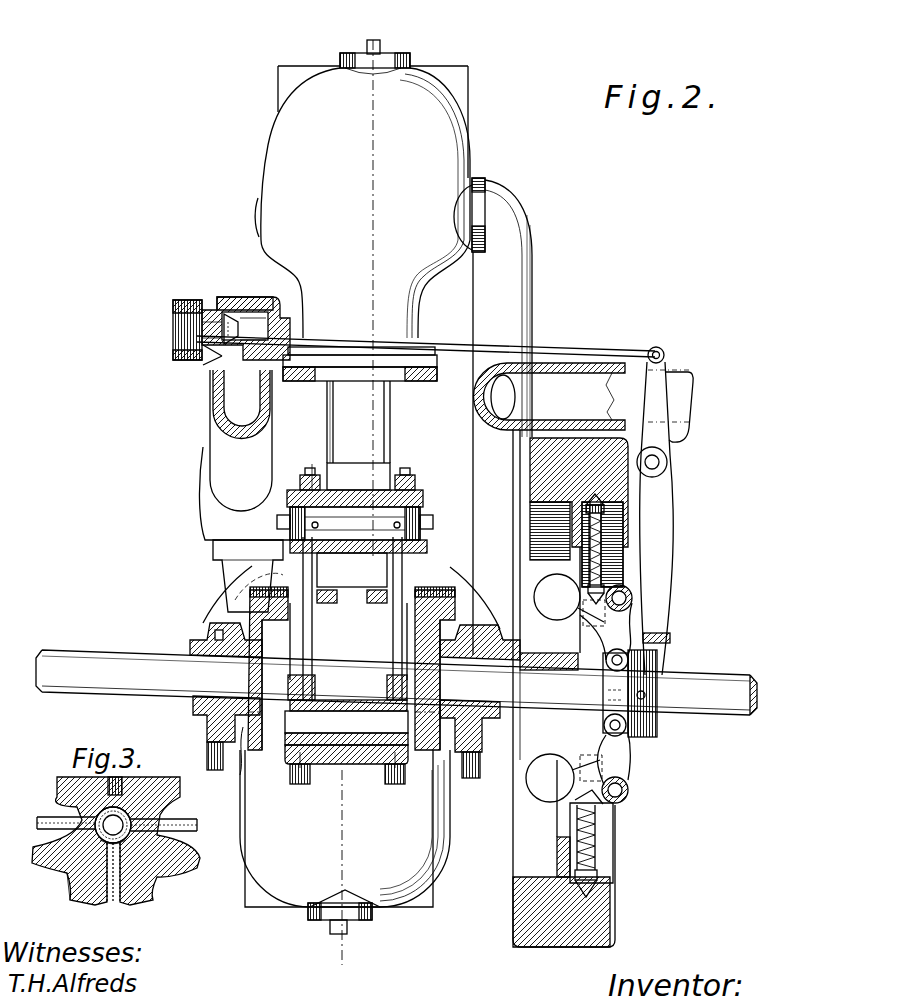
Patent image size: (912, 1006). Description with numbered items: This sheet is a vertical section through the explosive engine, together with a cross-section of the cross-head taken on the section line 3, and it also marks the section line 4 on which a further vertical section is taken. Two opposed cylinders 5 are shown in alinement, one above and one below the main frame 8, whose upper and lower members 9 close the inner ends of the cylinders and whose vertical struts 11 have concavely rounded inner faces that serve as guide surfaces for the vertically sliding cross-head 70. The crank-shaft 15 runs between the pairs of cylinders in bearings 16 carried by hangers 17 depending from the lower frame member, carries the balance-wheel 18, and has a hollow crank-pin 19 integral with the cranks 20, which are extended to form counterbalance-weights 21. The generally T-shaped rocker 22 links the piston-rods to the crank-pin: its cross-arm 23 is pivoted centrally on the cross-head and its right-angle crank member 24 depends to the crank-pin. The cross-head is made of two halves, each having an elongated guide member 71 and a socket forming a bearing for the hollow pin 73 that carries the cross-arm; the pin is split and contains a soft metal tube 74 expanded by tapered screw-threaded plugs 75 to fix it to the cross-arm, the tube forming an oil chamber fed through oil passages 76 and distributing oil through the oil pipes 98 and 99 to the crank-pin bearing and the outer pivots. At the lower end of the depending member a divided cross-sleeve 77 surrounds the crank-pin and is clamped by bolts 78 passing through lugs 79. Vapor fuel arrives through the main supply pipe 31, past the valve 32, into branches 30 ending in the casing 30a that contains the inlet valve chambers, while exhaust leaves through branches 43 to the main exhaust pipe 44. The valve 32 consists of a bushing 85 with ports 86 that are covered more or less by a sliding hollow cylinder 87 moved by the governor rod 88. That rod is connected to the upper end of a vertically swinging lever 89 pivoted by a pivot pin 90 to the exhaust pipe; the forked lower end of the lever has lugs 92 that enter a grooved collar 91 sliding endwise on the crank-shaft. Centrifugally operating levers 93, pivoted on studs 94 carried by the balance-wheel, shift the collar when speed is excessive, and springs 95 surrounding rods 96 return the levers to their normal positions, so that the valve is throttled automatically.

In FIG. 2, the section line 3 is at (314, 514).
In FIG. 2, the section line 4 is at (388, 30).
In FIG. 2, the cylinder 5 is at (268, 140).
In FIG. 2, the main frame 8 is at (432, 386).
In FIG. 2, the upper and lower members 9 is at (312, 381).
In FIG. 2, the vertical strut 11 is at (358, 422).
In FIG. 2, the crank-shaft 15 is at (396, 682).
In FIG. 2, the bearing 16 is at (198, 630).
In FIG. 2, the hanger 17 is at (222, 596).
In FIG. 2, the balance-wheel 18 is at (612, 910).
In FIG. 2, the hollow crank-pin 19 is at (347, 752).
In FIG. 2, the crank 20 is at (344, 685).
In FIG. 2, the counterbalance-weight 21 is at (351, 668).
In FIG. 2, the rocker 22 is at (419, 565).
In FIG. 2, the cross-arm 23 is at (304, 490).
In FIG. 3, the cross-arm 23 is at (60, 790).
In FIG. 2, the crank member 24 is at (387, 663).
In FIG. 3, the crank member 24 is at (62, 888).
In FIG. 2, the branch 30 is at (241, 440).
In FIG. 2, the casing 30a is at (200, 492).
In FIG. 2, the main supply pipe 31 is at (173, 353).
In FIG. 2, the valve 32 is at (213, 308).
In FIG. 2, the exhaust branch 43 is at (493, 416).
In FIG. 2, the main exhaust pipe 44 is at (549, 396).
In FIG. 2, the cross-head 70 is at (376, 486).
In FIG. 2, the guide member 71 is at (352, 578).
In FIG. 2, the hollow pin 73 is at (425, 512).
In FIG. 3, the hollow pin 73 is at (180, 793).
In FIG. 2, the tube 74 is at (427, 546).
In FIG. 3, the tube 74 is at (125, 838).
In FIG. 2, the screw-threaded plug 75 is at (277, 523).
In FIG. 2, the oil passage 76 is at (308, 478).
In FIG. 2, the cross-sleeve 77 is at (358, 700).
In FIG. 2, the bolt 78 is at (345, 782).
In FIG. 2, the lug 79 is at (346, 750).
In FIG. 2, the bushing 85 is at (264, 304).
In FIG. 2, the port 86 is at (236, 300).
In FIG. 2, the hollow cylinder 87 is at (200, 367).
In FIG. 2, the governor rod 88 is at (577, 348).
In FIG. 2, the lever 89 is at (662, 525).
In FIG. 2, the pivot pin 90 is at (658, 463).
In FIG. 2, the grooved collar 91 is at (642, 727).
In FIG. 2, the lug 92 is at (648, 692).
In FIG. 2, the centrifugal lever 93 is at (613, 625).
In FIG. 2, the stud 94 is at (590, 802).
In FIG. 2, the spring 95 is at (623, 540).
In FIG. 2, the rod 96 is at (603, 567).
In FIG. 3, the oil pipe 98 is at (208, 832).
In FIG. 2, the oil pipe 99 is at (352, 618).
In FIG. 3, the oil pipe 99 is at (115, 888).